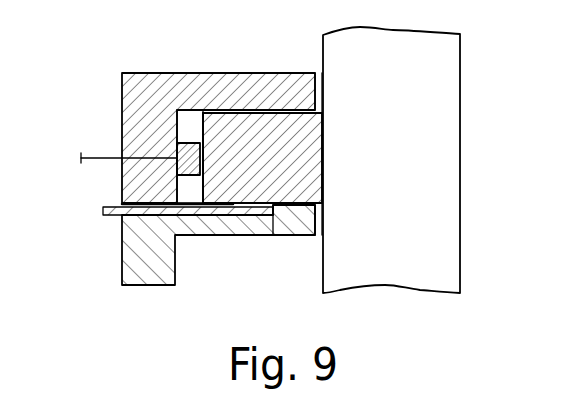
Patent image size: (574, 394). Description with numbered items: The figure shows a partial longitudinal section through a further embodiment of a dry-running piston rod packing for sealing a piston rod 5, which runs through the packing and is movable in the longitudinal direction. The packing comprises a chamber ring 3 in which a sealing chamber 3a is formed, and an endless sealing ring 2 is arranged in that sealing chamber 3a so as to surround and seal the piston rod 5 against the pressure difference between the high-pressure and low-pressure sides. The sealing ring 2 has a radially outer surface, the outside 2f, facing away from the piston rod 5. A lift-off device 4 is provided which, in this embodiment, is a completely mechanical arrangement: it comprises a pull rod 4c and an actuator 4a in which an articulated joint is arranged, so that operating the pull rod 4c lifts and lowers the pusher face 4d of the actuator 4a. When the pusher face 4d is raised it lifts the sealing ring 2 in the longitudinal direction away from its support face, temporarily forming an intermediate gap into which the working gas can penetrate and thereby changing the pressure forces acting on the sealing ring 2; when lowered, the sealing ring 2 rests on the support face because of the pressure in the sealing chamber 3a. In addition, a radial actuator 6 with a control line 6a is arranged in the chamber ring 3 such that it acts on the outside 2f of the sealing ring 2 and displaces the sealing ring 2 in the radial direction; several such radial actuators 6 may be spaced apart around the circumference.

The sealing ring 2 is at (282, 118).
The outside 2f is at (196, 126).
The chamber ring 3 is at (137, 85).
The sealing chamber 3a is at (188, 118).
The lift-off device 4 is at (243, 212).
The actuator 4a is at (294, 255).
The pull rod 4c is at (118, 211).
The pusher face 4d is at (262, 192).
The piston rod 5 is at (428, 158).
The radial actuator 6 is at (192, 163).
The control line 6a is at (81, 158).